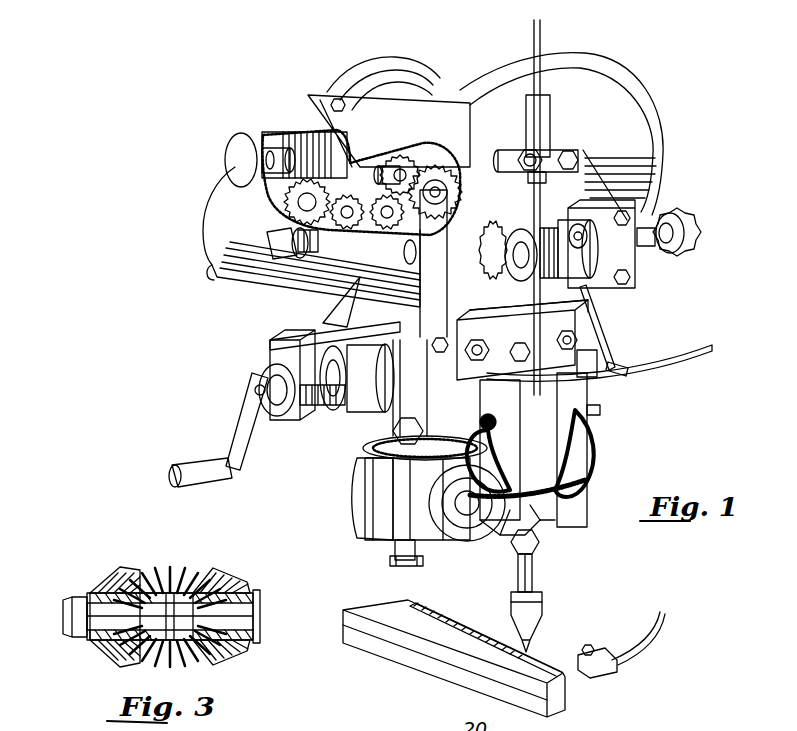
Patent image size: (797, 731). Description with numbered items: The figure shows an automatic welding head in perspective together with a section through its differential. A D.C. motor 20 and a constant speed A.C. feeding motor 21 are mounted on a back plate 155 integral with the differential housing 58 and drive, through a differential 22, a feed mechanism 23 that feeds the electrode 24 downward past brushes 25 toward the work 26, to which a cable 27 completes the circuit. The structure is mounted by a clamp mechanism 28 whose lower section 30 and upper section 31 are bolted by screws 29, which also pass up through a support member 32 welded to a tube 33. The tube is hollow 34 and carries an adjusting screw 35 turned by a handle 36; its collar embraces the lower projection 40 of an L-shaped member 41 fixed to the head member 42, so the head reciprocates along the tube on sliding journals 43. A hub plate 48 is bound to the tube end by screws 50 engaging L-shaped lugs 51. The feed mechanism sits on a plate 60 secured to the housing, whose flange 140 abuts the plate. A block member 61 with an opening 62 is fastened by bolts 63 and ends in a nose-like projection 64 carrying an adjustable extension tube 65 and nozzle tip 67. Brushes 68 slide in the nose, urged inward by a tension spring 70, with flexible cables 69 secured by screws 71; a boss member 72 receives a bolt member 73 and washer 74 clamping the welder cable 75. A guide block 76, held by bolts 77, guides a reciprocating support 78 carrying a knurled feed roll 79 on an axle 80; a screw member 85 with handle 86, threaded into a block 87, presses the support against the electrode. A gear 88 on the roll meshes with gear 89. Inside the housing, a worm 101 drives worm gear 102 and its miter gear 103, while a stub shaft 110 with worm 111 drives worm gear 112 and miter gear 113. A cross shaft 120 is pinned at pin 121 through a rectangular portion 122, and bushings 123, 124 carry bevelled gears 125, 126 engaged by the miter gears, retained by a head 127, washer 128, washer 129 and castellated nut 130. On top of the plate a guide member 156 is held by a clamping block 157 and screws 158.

In FIG. 1, the motor 20 is at (608, 76).
In FIG. 1, the motor 21 is at (380, 62).
In FIG. 1, the differential 22 is at (277, 213).
In FIG. 1, the feed mechanism 23 is at (503, 259).
In FIG. 1, the electrode 24 is at (542, 46).
In FIG. 1, the brushes 25 is at (567, 493).
In FIG. 1, the work 26 is at (423, 660).
In FIG. 1, the cable 27 is at (662, 636).
In FIG. 1, the clamp mechanism 28 is at (457, 543).
In FIG. 1, the screws 29 is at (390, 560).
In FIG. 1, the lower section 30 is at (387, 507).
In FIG. 1, the upper section 31 is at (362, 481).
In FIG. 1, the support member 32 is at (373, 440).
In FIG. 1, the tube 33 is at (332, 412).
In FIG. 1, the hollow 34 is at (320, 353).
In FIG. 1, the adjusting screw 35 is at (320, 407).
In FIG. 1, the handle 36 is at (236, 433).
In FIG. 1, the lower projection 40 is at (268, 373).
In FIG. 1, the L-shaped member 41 is at (267, 340).
In FIG. 1, the head member 42 is at (338, 311).
In FIG. 1, the sliding journals 43 is at (437, 338).
In FIG. 1, the hub plate 48 is at (600, 410).
In FIG. 1, the screws 50 is at (600, 360).
In FIG. 1, the L-shaped lugs 51 is at (627, 368).
In FIG. 1, the differential housing 58 is at (212, 242).
In FIG. 1, the plate 60 is at (462, 284).
In FIG. 1, the block member 61 is at (590, 400).
In FIG. 1, the opening 62 is at (527, 313).
In FIG. 1, the bolts 63 is at (580, 338).
In FIG. 1, the nose-like projection 64 is at (553, 515).
In FIG. 1, the extension tube 65 is at (536, 576).
In FIG. 1, the nozzle tip 67 is at (544, 611).
In FIG. 1, the brushes 68 is at (570, 495).
In FIG. 1, the flexible cables 69 is at (512, 462).
In FIG. 1, the tension spring 70 is at (582, 481).
In FIG. 1, the screws 71 is at (498, 424).
In FIG. 1, the boss member 72 is at (531, 353).
In FIG. 1, the bolt member 73 is at (477, 338).
In FIG. 1, the washer 74 is at (497, 396).
In FIG. 1, the cable 75 is at (690, 350).
In FIG. 1, the guide block 76 is at (633, 262).
In FIG. 1, the bolts 77 is at (640, 206).
In FIG. 1, the reciprocating support 78 is at (588, 234).
In FIG. 1, the knurled feed roll 79 is at (585, 292).
In FIG. 1, the axle 80 is at (578, 222).
In FIG. 1, the screw member 85 is at (700, 224).
In FIG. 1, the handle 86 is at (700, 248).
In FIG. 1, the block 87 is at (680, 259).
In FIG. 1, the gear 88 is at (547, 222).
In FIG. 1, the gear 89 is at (492, 224).
In FIG. 1, the worm 101 is at (418, 124).
In FIG. 1, the worm gear 102 is at (440, 214).
In FIG. 1, the miter gear 103 is at (357, 243).
In FIG. 1, the stub shaft 110 is at (310, 130).
In FIG. 1, the worm 111 is at (268, 130).
In FIG. 1, the worm gear 112 is at (277, 203).
In FIG. 1, the miter gear 113 is at (366, 196).
In FIG. 3, the miter gear 113 is at (160, 575).
In FIG. 3, the cross shaft 120 is at (235, 592).
In FIG. 3, the pin 121 is at (172, 590).
In FIG. 3, the rectangular portion 122 is at (178, 590).
In FIG. 3, the bushing 123 is at (225, 578).
In FIG. 3, the bushing 124 is at (110, 578).
In FIG. 3, the bevelled gear 125 is at (228, 658).
In FIG. 1, the bevelled gear 126 is at (272, 233).
In FIG. 3, the bevelled gear 126 is at (110, 668).
In FIG. 3, the head 127 is at (262, 626).
In FIG. 3, the washer 128 is at (257, 592).
In FIG. 3, the washer 129 is at (86, 595).
In FIG. 3, the castellated nut 130 is at (78, 638).
In FIG. 1, the flange 140 is at (407, 254).
In FIG. 1, the back plate 155 is at (440, 118).
In FIG. 1, the guide member 156 is at (552, 112).
In FIG. 1, the clamping block 157 is at (576, 149).
In FIG. 1, the screws 158 is at (578, 154).